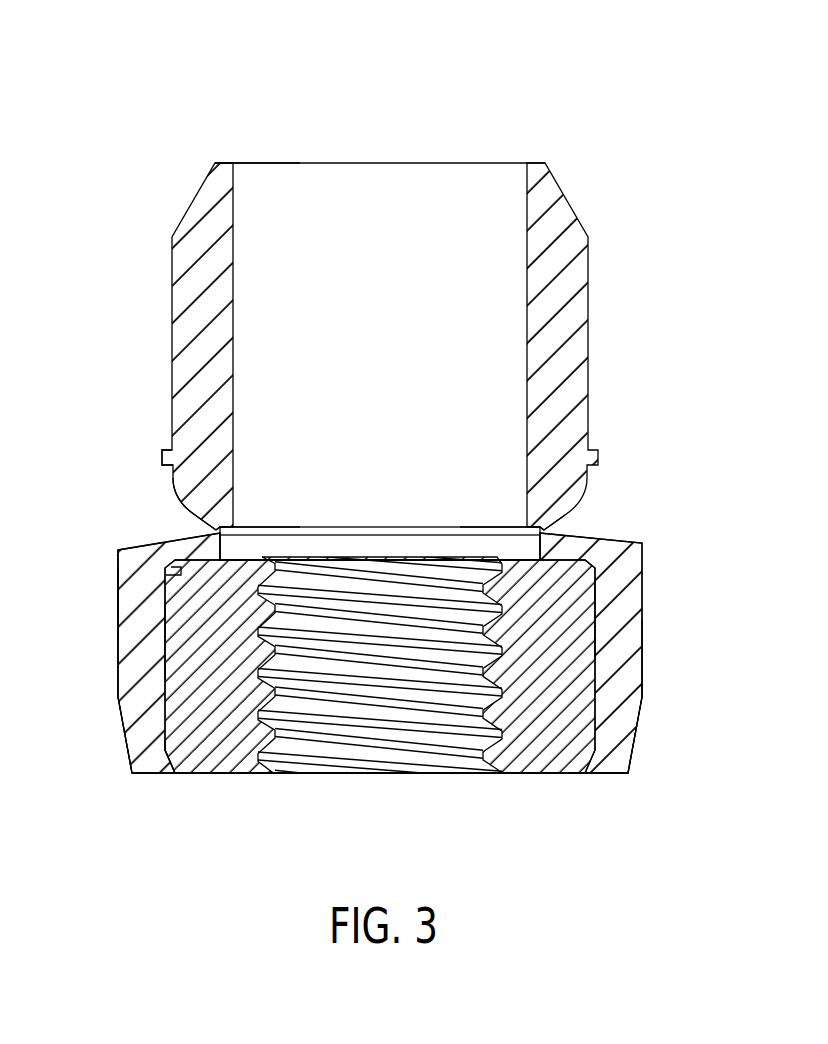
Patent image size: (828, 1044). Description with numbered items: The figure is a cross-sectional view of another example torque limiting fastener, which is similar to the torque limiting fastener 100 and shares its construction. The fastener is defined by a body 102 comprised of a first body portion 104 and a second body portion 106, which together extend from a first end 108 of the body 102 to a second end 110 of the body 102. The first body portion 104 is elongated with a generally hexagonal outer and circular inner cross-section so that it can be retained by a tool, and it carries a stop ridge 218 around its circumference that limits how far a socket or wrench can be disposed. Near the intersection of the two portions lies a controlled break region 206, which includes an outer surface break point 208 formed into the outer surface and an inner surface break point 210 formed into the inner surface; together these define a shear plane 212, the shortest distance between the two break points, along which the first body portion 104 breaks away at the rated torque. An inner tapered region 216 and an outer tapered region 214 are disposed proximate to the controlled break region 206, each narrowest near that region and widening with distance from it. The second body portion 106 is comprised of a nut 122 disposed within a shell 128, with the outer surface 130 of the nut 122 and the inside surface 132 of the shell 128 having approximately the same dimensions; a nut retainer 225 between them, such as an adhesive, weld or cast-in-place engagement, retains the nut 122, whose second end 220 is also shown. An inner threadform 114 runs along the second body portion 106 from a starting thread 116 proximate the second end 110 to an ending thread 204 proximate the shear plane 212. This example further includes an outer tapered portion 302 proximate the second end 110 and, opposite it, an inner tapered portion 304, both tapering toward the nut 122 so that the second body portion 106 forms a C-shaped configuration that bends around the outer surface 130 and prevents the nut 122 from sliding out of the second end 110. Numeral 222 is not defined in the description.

The torque limiting fastener 100 is at (208, 80).
The body 102 is at (648, 533).
The first body portion 104 is at (612, 163).
The second body portion 106 is at (70, 540).
The first end 108 is at (205, 160).
The second end 110 is at (648, 771).
The inner threadform 114 is at (334, 748).
The starting thread 116 is at (384, 776).
The nut 122 is at (542, 776).
The shell 128 is at (156, 598).
The outer surface of the nut 130 is at (600, 657).
The inside surface of the shell 132 is at (600, 617).
The ending thread 204 is at (320, 556).
The controlled break region 206 is at (204, 527).
The outer surface break point 208 is at (201, 521).
The inner surface break point 210 is at (551, 542).
The shear plane 212 is at (220, 523).
The outer tapered region 214 is at (196, 489).
The inner tapered region 216 is at (538, 520).
The stop ridge 218 is at (167, 445).
The second end of the nut 220 is at (242, 554).
The bottom face left 222 is at (239, 776).
The nut retainer 225 is at (160, 632).
The outer tapered portion 302 is at (127, 775).
The inner tapered portion 304 is at (177, 748).